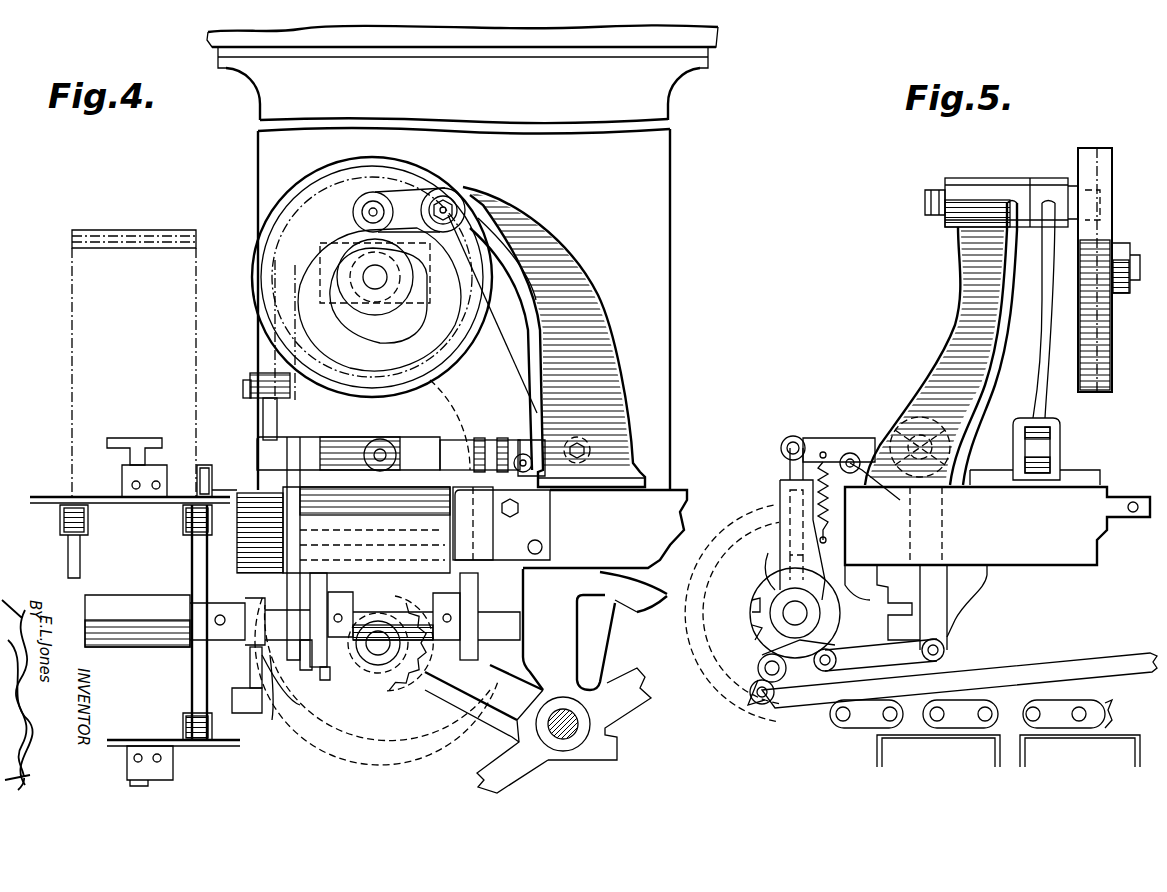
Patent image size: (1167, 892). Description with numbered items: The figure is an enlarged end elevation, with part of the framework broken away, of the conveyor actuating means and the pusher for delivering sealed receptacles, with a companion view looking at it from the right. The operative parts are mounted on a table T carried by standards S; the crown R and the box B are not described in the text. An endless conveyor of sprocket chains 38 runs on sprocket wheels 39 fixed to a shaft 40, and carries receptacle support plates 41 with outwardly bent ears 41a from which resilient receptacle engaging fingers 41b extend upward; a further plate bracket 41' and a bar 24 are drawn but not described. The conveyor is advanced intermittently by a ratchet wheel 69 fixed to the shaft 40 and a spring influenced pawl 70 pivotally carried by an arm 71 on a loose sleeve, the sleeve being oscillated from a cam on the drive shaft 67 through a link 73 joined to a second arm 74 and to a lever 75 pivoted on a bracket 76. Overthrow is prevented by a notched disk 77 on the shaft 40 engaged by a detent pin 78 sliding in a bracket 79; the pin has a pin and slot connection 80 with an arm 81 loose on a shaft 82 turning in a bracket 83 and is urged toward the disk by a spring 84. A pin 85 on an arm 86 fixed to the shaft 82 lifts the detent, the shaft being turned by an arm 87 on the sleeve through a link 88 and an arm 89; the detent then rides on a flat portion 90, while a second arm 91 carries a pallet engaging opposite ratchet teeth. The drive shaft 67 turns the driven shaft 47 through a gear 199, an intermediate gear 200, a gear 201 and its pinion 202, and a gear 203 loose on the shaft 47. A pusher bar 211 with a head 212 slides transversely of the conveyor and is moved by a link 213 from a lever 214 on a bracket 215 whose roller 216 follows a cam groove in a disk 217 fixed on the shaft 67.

In FIG. 4, the crown / top rail R is at (720, 34).
In FIG. 4, the standards S is at (665, 193).
In FIG. 4, the table T is at (681, 489).
In FIG. 5, the table T is at (997, 526).
In FIG. 4, the box / magazine B is at (83, 364).
In FIG. 4, the disk 217 is at (349, 183).
In FIG. 5, the disk 217 is at (1086, 393).
In FIG. 4, the roller 216 is at (388, 195).
In FIG. 5, the roller 216 is at (1077, 178).
In FIG. 4, the drive shaft 67 is at (380, 285).
In FIG. 5, the drive shaft 67 is at (1133, 257).
In FIG. 4, the lever 214 is at (532, 318).
In FIG. 5, the lever 214 is at (1048, 372).
In FIG. 5, the bracket 215 is at (947, 343).
In FIG. 4, the gear 199 is at (462, 357).
In FIG. 4, the intermediate gear 200 is at (430, 415).
In FIG. 4, the link 213 is at (520, 450).
In FIG. 5, the link 213 is at (1040, 445).
In FIG. 5, the bar 211 is at (1040, 465).
In FIG. 4, the bracket 76 is at (256, 398).
In FIG. 4, the lever 75 is at (268, 422).
In FIG. 4, the shaft 82 is at (400, 437).
In FIG. 5, the shaft 82 is at (902, 414).
In FIG. 4, the bracket 83 is at (432, 440).
In FIG. 4, the pin 85 is at (480, 438).
In FIG. 5, the pin 85 is at (852, 453).
In FIG. 4, the arm 86 is at (503, 438).
In FIG. 5, the arm 86 is at (862, 470).
In FIG. 4, the arm 89 is at (262, 536).
In FIG. 5, the arm 89 is at (962, 597).
In FIG. 4, the detent pin 78 is at (455, 576).
In FIG. 5, the detent pin 78 is at (790, 470).
In FIG. 4, the bracket 79 is at (548, 522).
In FIG. 5, the bracket 79 is at (780, 492).
In FIG. 4, the bar 24 is at (228, 488).
In FIG. 4, the head 212 is at (197, 467).
In FIG. 4, the plates 41 is at (135, 621).
In FIG. 5, the plates 41 is at (938, 753).
In FIG. 4, the ears 41a is at (181, 774).
In FIG. 4, the receptacle engaging fingers 41b is at (109, 441).
In FIG. 5, the plate bracket 41' is at (1069, 760).
In FIG. 4, the sprocket chains 38 is at (142, 524).
In FIG. 5, the sprocket chains 38 is at (1062, 708).
In FIG. 4, the sprocket wheels 39 is at (150, 558).
In FIG. 5, the sprocket wheels 39 is at (951, 631).
In FIG. 4, the shaft 40 is at (88, 610).
In FIG. 5, the shaft 40 is at (790, 618).
In FIG. 4, the arm 71 is at (310, 630).
In FIG. 5, the arm 71 is at (705, 685).
In FIG. 4, the disk 77 is at (495, 650).
In FIG. 5, the disk 77 is at (760, 587).
In FIG. 4, the pinion 202 is at (375, 670).
In FIG. 4, the gear 201 is at (361, 758).
In FIG. 4, the ratchet wheel 69 is at (323, 660).
In FIG. 5, the ratchet wheel 69 is at (755, 624).
In FIG. 4, the pawl 70 is at (323, 688).
In FIG. 5, the pawl 70 is at (772, 705).
In FIG. 4, the link 73 is at (235, 686).
In FIG. 5, the link 73 is at (1062, 657).
In FIG. 4, the second arm 74 is at (262, 717).
In FIG. 5, the second arm 74 is at (733, 704).
In FIG. 4, the arm 87 is at (272, 722).
In FIG. 5, the arm 87 is at (849, 635).
In FIG. 5, the link 88 is at (878, 668).
In FIG. 4, the gear 203 is at (625, 702).
In FIG. 4, the driven shaft 47 is at (570, 755).
In FIG. 5, the pin and slot connection 80 is at (794, 438).
In FIG. 5, the arm 81 is at (832, 435).
In FIG. 5, the spring 84 is at (823, 443).
In FIG. 5, the flat portion 90 is at (757, 616).
In FIG. 5, the second arm 91 is at (768, 553).